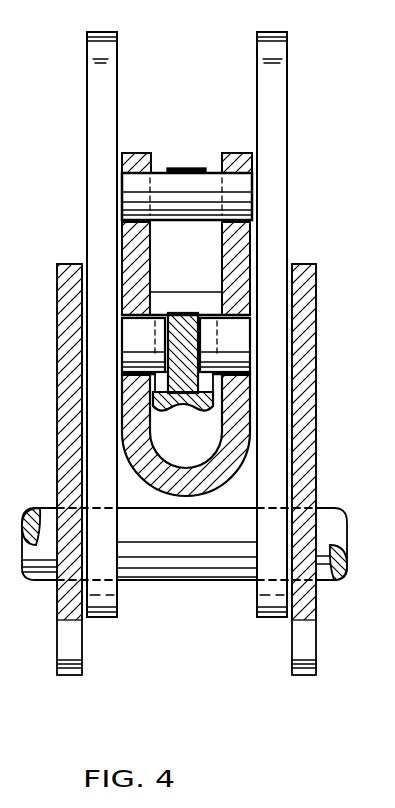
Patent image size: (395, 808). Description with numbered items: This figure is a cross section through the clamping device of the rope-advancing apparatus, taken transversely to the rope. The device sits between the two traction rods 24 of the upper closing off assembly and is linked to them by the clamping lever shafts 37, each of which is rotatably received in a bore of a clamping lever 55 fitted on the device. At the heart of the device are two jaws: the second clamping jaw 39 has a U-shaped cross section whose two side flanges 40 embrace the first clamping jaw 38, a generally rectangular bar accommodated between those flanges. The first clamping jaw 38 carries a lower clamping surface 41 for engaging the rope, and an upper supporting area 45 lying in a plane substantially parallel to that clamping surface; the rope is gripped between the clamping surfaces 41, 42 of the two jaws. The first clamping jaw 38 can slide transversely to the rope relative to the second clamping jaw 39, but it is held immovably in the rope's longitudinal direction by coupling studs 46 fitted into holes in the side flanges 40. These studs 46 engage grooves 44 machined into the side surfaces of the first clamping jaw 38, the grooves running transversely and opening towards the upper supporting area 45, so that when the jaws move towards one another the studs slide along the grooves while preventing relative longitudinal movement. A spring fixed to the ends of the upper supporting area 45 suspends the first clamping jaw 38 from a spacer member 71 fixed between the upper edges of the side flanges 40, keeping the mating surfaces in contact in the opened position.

The traction rods 24 is at (67, 355).
The clamping lever shafts 37 is at (214, 570).
The first clamping jaw 38 is at (217, 402).
The second clamping jaw 39 is at (242, 420).
The side flanges 40 is at (135, 243).
The lower clamping surface 41 is at (175, 413).
The clamping surface 42 is at (194, 460).
The grooves 44 is at (160, 382).
The upper supporting area 45 is at (187, 312).
The coupling studs 46 is at (130, 342).
The clamping lever 55 is at (95, 162).
The spacer member 71 is at (160, 192).